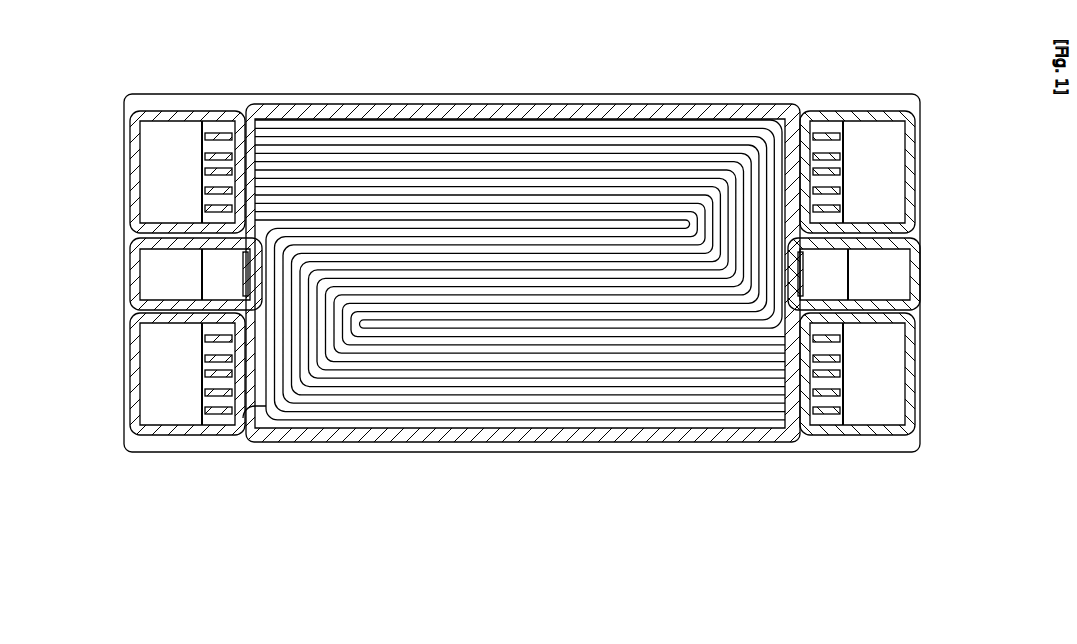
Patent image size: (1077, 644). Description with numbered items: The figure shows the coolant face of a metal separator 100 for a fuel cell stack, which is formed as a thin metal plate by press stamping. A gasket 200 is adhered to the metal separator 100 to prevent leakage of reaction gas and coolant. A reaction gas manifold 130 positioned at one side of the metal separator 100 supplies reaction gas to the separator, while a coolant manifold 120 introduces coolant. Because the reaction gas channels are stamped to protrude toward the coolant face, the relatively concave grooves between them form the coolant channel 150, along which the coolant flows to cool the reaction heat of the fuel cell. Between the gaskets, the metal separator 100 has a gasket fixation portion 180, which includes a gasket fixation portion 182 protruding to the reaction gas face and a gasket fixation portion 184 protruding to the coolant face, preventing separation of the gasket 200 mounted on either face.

The metal separator 100 is at (204, 101).
The coolant manifold 120 is at (157, 268).
The reaction gas manifold 130 is at (158, 176).
The coolant channel 150 is at (470, 130).
The gasket fixation portion 180 is at (523, 403).
The gasket fixation portion protruding to the reaction gas face 182 is at (250, 278).
The gasket fixation portion protruding to the coolant face 184 is at (268, 420).
The gasket 200 is at (805, 446).